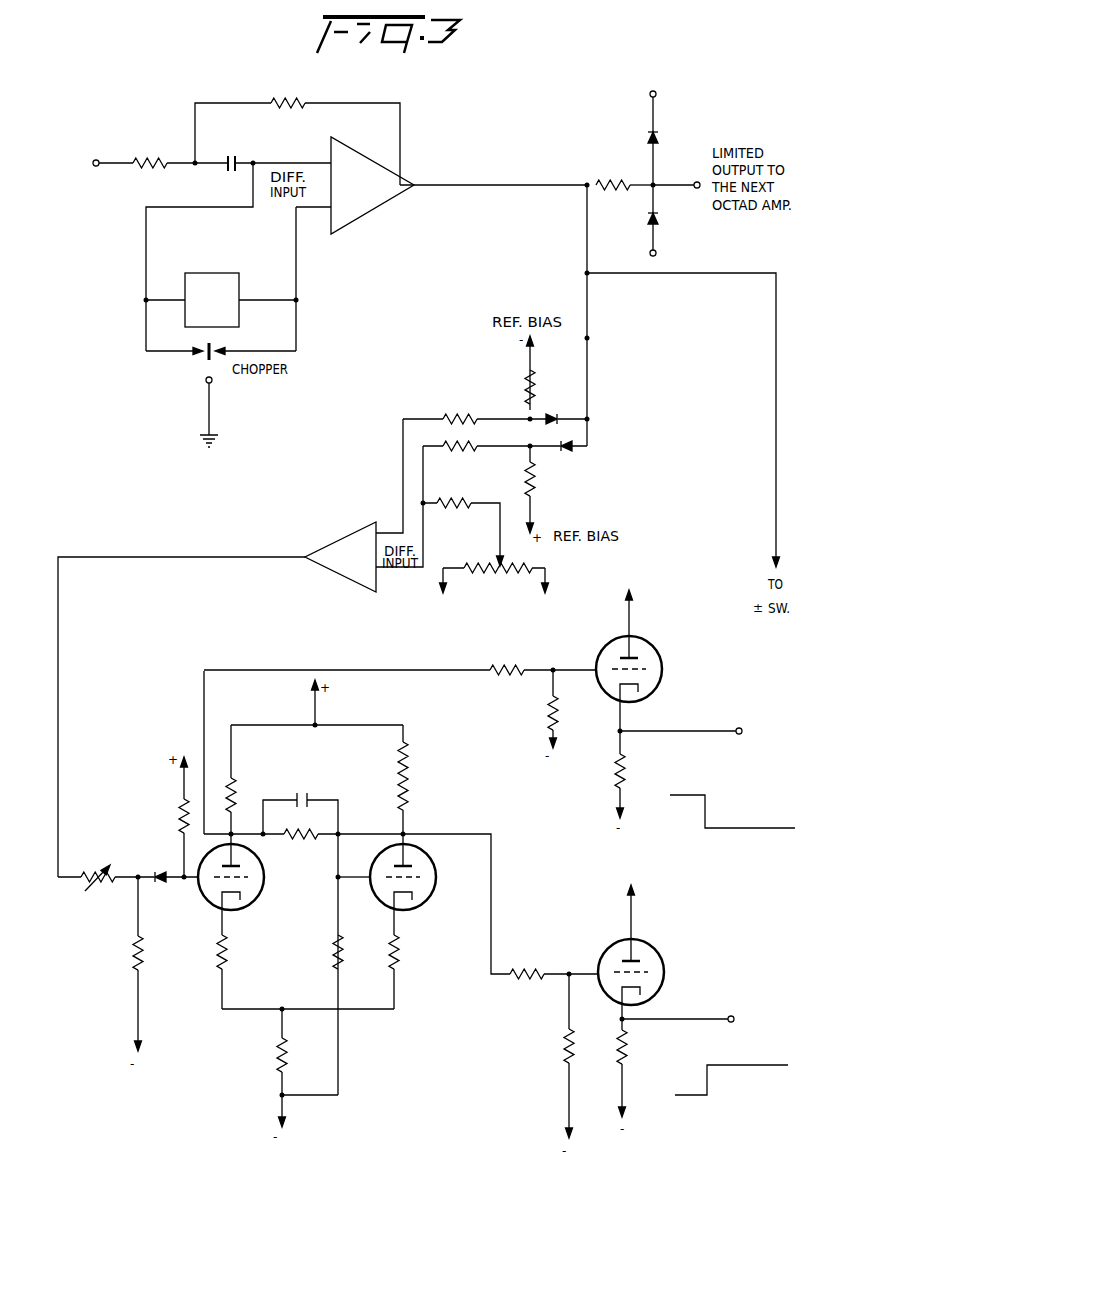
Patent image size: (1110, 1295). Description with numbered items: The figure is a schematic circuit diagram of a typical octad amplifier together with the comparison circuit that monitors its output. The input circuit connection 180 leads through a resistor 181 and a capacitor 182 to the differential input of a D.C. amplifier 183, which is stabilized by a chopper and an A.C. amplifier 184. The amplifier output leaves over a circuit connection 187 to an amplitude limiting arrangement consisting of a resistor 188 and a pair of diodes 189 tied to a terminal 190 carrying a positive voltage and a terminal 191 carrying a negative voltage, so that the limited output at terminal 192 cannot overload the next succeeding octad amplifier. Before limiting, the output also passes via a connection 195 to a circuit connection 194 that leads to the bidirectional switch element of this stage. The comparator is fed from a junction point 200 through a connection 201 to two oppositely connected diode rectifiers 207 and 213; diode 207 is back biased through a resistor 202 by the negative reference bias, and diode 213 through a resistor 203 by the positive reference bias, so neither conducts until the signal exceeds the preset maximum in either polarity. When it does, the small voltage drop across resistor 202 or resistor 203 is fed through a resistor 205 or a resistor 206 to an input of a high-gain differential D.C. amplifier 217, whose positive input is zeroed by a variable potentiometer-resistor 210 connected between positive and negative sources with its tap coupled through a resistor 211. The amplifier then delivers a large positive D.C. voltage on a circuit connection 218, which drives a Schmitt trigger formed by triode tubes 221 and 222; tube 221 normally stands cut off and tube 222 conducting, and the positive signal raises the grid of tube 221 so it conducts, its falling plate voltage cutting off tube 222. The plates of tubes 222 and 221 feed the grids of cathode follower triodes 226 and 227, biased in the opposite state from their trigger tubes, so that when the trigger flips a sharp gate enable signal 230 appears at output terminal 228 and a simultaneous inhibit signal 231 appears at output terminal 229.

The input circuit connection 180 is at (107, 160).
The resistor 181 is at (152, 160).
The capacitor 182 is at (238, 158).
The D.C. amplifier 183 is at (348, 150).
The A.C. amplifier 184 is at (185, 313).
The circuit connection 187 is at (501, 185).
The resistor 188 is at (610, 180).
The diodes 189 is at (658, 137).
The terminal 190 is at (650, 96).
The terminal 191 is at (650, 254).
The terminal 192 is at (697, 181).
The circuit connection 194 is at (778, 520).
The connection 195 is at (587, 225).
The junction point 200 is at (585, 273).
The connection 201 is at (590, 337).
The resistor 202 is at (527, 390).
The resistor 203 is at (540, 484).
The resistor 205 is at (458, 413).
The resistor 206 is at (470, 452).
The diode rectifier 207 is at (553, 412).
The variable potentiometer-resistor 210 is at (480, 563).
The resistor 211 is at (470, 510).
The diode rectifier 213 is at (572, 448).
The differential D.C. amplifier 217 is at (325, 547).
The circuit connection 218 is at (59, 730).
The triode tube 221 is at (237, 906).
The triode tube 222 is at (414, 906).
The triode 226 is at (661, 964).
The triode 227 is at (659, 661).
The output terminal 228 is at (733, 1023).
The output terminal 229 is at (742, 728).
The signal 230 is at (708, 1087).
The signal 231 is at (708, 818).